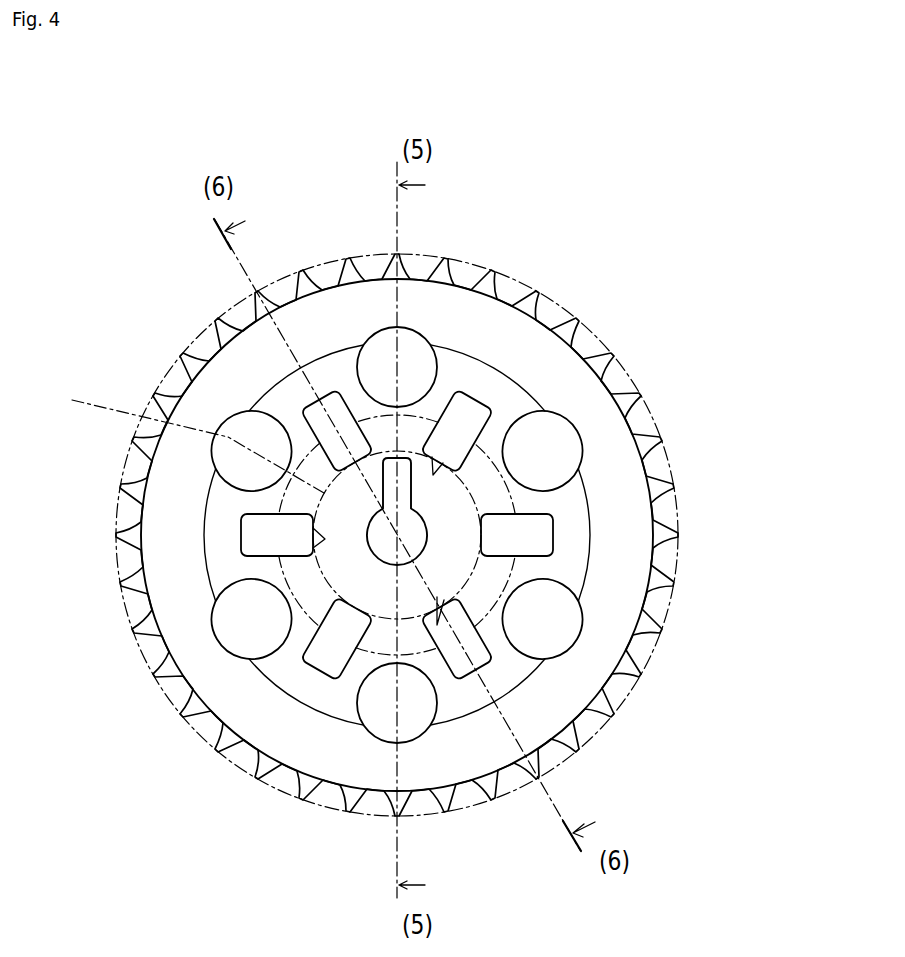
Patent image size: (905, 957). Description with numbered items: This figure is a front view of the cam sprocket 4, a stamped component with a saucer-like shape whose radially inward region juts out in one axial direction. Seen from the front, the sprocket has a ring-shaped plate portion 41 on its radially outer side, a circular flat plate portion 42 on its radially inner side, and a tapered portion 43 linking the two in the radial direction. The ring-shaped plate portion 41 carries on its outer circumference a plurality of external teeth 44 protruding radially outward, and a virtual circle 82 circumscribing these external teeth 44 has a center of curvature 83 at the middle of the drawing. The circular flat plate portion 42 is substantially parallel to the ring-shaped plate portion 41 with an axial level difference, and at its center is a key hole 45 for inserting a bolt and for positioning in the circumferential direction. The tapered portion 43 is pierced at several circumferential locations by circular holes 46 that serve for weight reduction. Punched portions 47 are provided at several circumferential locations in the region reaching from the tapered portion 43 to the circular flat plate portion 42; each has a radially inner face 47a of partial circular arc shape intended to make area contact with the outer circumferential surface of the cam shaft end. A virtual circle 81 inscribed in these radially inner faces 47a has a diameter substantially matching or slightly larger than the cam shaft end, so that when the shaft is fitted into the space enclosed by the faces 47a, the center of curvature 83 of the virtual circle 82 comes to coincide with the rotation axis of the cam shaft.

The cam sprocket 4 is at (518, 200).
The ring-shaped plate portion 41 is at (557, 360).
The circular flat plate portion 42 is at (560, 396).
The tapered portion 43 is at (490, 387).
The external teeth 44 is at (195, 357).
The key hole 45 is at (345, 522).
The circular holes 46 is at (283, 427).
The punched portions 47 is at (340, 625).
The radially inner faces 47a is at (413, 457).
The virtual circle 81 is at (181, 439).
The virtual circle 82 is at (672, 592).
The center of curvature 83 is at (411, 544).